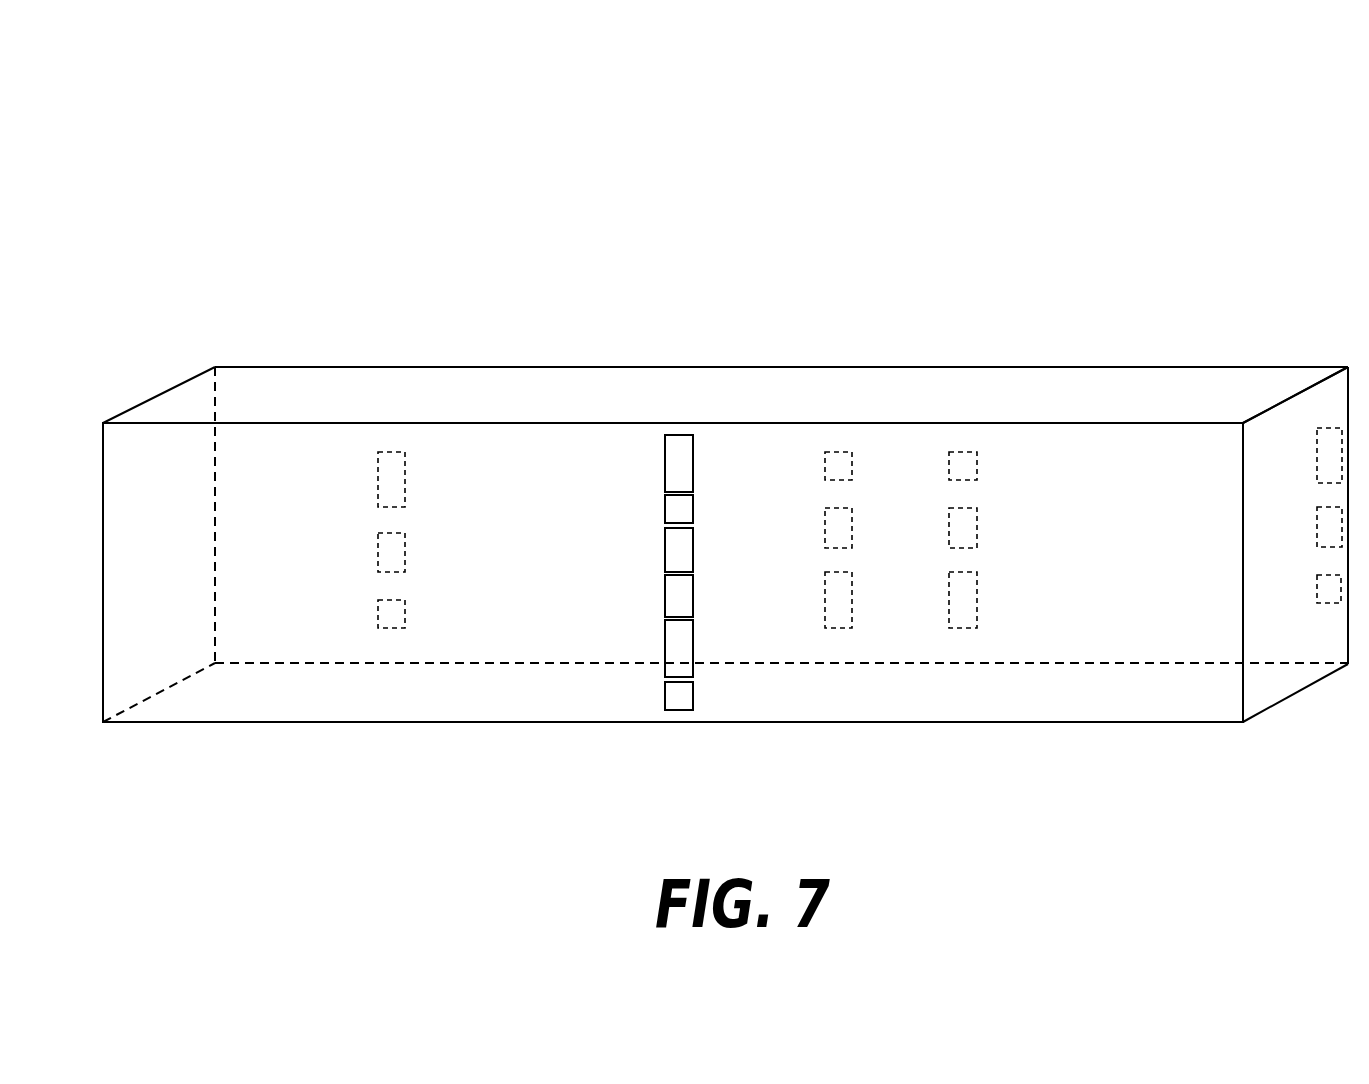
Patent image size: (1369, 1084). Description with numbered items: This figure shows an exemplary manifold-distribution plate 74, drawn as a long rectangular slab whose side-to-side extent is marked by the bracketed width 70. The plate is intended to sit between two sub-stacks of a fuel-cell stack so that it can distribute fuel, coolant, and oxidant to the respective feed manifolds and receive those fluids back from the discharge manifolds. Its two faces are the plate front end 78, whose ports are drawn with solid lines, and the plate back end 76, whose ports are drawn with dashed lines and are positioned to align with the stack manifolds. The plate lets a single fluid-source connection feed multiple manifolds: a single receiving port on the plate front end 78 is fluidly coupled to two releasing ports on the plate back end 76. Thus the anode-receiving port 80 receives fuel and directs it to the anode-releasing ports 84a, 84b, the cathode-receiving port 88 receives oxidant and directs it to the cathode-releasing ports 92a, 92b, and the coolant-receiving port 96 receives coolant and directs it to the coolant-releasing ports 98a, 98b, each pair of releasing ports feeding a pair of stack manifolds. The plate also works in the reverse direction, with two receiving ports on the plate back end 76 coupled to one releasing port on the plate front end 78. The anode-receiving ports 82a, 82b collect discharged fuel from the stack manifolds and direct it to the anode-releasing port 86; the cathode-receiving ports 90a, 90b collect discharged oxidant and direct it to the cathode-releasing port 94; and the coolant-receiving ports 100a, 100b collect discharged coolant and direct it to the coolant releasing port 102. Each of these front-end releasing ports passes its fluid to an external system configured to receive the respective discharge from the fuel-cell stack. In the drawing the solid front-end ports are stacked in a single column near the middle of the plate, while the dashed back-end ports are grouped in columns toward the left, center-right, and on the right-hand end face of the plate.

The width 70 is at (82, 553).
The manifold-distribution plate 74 is at (328, 134).
The plate back end 76 is at (635, 367).
The plate front end 78 is at (1160, 422).
The anode-receiving port 80 is at (665, 700).
The anode-receiving port 82a is at (825, 470).
The anode-receiving port 82b is at (977, 461).
The anode-releasing port 84a is at (405, 620).
The anode-releasing port 84b is at (1316, 607).
The anode-releasing port 86 is at (665, 510).
The cathode-receiving port 88 is at (665, 648).
The cathode-receiving port 90a is at (405, 473).
The cathode-receiving port 90b is at (1316, 477).
The cathode-releasing port 92a is at (825, 612).
The cathode-releasing port 92b is at (977, 605).
The cathode-releasing port 94 is at (665, 462).
The coolant-receiving port 96 is at (665, 600).
The coolant-releasing port 98a is at (825, 511).
The coolant-releasing port 98b is at (977, 538).
The coolant-receiving port 100a is at (405, 553).
The coolant-receiving port 100b is at (1316, 550).
The coolant-releasing port 102 is at (665, 553).